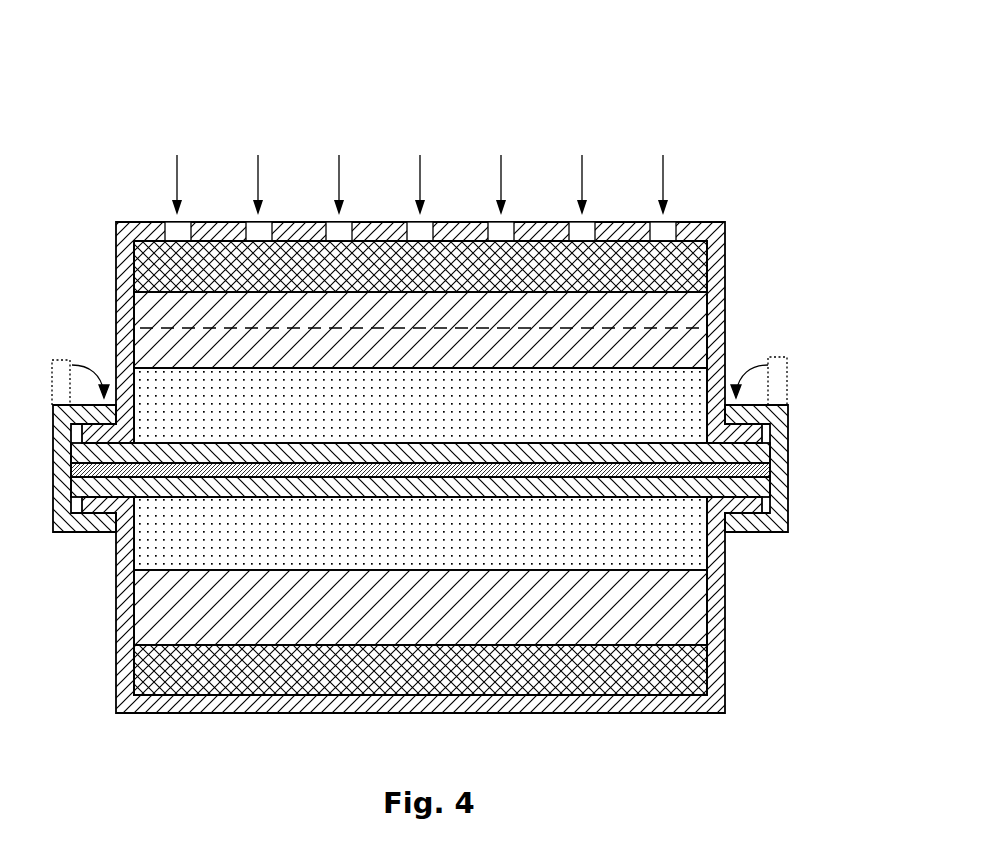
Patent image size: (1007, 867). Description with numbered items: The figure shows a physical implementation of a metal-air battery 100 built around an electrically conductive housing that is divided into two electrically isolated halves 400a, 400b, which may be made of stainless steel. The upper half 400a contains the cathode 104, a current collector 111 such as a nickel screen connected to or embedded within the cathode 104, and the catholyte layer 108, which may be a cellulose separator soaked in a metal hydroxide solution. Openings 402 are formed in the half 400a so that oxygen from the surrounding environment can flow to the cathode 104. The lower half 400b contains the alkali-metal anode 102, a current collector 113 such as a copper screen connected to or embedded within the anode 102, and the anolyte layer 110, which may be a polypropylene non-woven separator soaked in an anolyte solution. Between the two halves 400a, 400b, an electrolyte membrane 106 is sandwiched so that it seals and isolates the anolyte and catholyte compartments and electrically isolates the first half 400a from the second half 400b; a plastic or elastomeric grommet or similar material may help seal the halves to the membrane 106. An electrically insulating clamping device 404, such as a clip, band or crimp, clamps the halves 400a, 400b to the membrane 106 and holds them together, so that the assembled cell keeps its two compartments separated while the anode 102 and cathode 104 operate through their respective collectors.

The metal-air battery 100 is at (467, 362).
The openings 402 is at (250, 222).
The current collector 111 is at (688, 266).
The housing half 400a is at (715, 283).
The cathode 104 is at (730, 293).
The catholyte layer 108 is at (690, 400).
The clamping device 404 is at (780, 422).
The electrolyte membrane 106 is at (793, 438).
The anolyte layer 110 is at (687, 537).
The alkali-metal anode 102 is at (684, 600).
The housing half 400b is at (717, 638).
The current collector 113 is at (684, 665).